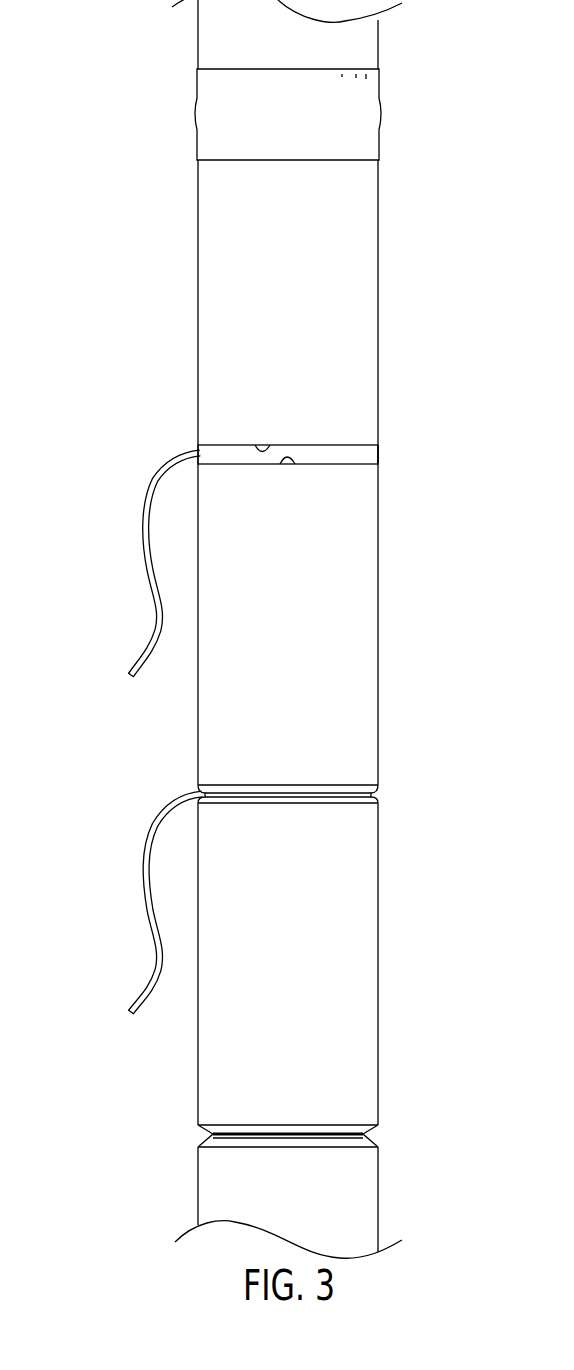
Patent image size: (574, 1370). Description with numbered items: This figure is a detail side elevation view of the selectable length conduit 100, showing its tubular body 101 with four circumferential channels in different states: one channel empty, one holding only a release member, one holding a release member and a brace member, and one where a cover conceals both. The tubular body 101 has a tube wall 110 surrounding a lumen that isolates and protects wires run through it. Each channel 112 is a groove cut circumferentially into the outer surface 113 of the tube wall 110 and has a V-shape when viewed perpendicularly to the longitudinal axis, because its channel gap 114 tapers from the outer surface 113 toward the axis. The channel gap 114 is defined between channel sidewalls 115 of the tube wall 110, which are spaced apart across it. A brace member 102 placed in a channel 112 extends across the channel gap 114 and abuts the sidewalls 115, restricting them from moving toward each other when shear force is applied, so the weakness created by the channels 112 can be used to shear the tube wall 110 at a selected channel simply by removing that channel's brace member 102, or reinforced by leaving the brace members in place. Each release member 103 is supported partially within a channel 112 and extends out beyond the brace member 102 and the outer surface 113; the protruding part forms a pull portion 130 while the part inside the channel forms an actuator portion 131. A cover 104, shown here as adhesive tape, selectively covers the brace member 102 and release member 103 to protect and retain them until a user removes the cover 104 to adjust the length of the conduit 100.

The selectable length conduit 100 is at (244, 629).
The tubular body 101 is at (260, 629).
The brace member 102 is at (328, 795).
The release member 103 is at (140, 733).
The cover 104 is at (370, 98).
The tube wall 110 is at (367, 227).
The channel 112 is at (392, 465).
The outer surface 113 is at (360, 288).
The channel gap 114 is at (197, 1134).
The channel sidewall 115 is at (262, 452).
The pull portion 130 is at (158, 957).
The actuator portion 131 is at (313, 797).